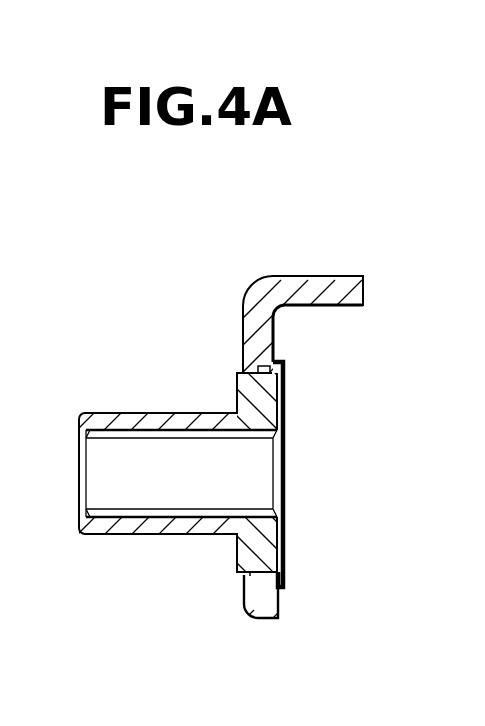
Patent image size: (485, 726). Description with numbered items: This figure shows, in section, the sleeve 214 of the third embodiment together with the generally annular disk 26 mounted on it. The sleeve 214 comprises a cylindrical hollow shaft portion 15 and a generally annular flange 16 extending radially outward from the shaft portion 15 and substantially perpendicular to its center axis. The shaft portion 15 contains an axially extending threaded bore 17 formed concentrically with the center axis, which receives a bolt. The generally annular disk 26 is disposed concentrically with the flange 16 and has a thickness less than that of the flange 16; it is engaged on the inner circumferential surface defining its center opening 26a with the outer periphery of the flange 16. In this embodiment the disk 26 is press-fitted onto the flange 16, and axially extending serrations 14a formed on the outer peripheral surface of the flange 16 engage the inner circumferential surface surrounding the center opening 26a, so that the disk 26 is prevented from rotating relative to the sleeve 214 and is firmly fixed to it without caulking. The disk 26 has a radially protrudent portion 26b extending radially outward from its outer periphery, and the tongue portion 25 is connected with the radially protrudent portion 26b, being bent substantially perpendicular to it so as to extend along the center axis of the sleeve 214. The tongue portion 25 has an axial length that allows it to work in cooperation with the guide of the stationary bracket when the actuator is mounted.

The tongue portion 25 is at (340, 278).
The radially protrudent portion 26b is at (243, 325).
The sleeve 214 is at (146, 408).
The serrations 14a is at (265, 371).
The flange 16 is at (270, 403).
The threaded bore 17 is at (133, 510).
The center opening 26a is at (262, 560).
The shaft portion 15 is at (122, 530).
The generally annular disk 26 is at (278, 596).